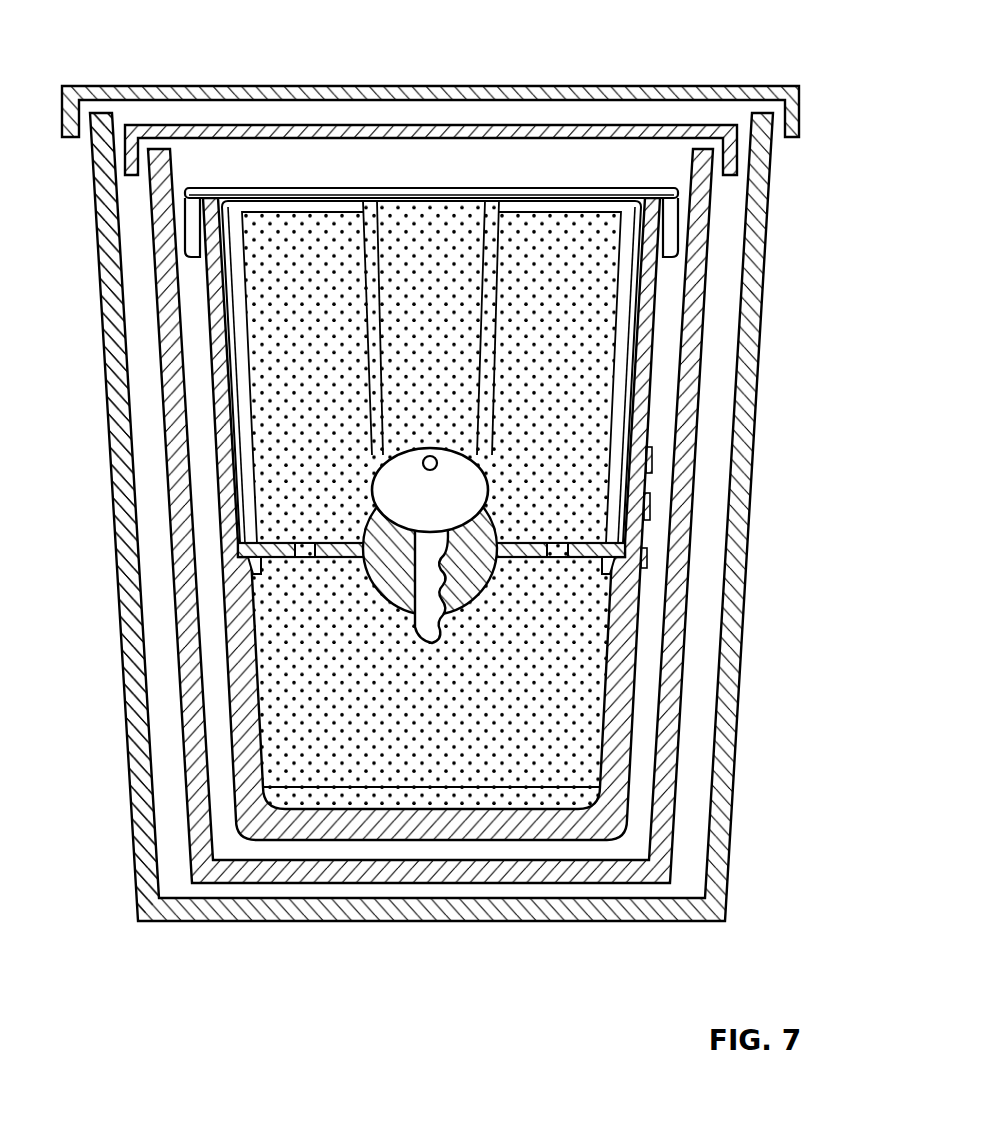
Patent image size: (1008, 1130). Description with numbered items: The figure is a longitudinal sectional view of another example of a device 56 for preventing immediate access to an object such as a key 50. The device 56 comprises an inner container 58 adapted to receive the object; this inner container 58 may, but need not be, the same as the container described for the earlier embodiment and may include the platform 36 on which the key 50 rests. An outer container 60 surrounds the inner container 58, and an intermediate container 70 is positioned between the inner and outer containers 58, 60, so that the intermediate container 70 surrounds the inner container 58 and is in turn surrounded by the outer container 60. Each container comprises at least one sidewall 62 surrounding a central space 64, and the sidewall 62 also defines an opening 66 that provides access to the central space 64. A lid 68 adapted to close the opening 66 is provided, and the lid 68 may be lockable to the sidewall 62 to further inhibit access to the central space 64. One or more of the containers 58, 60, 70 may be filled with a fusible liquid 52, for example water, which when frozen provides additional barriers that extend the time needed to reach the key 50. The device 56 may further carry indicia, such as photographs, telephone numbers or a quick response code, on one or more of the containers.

The platform 36 is at (537, 543).
The key 50 is at (465, 493).
The fusible liquid 52 is at (267, 240).
The device 56 is at (788, 447).
The inner container 58 is at (622, 712).
The outer container 60 is at (437, 517).
The sidewall 62 is at (140, 820).
The central space 64 is at (414, 714).
The opening 66 is at (665, 113).
The lid 68 is at (771, 88).
The intermediate container 70 is at (190, 743).